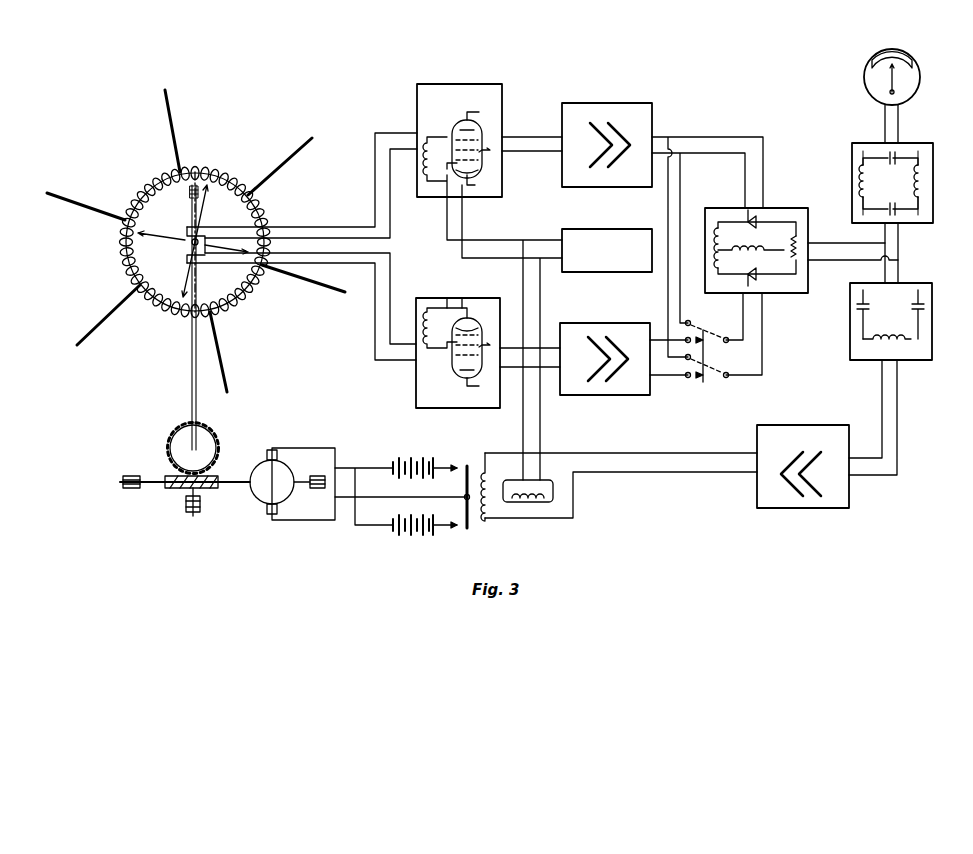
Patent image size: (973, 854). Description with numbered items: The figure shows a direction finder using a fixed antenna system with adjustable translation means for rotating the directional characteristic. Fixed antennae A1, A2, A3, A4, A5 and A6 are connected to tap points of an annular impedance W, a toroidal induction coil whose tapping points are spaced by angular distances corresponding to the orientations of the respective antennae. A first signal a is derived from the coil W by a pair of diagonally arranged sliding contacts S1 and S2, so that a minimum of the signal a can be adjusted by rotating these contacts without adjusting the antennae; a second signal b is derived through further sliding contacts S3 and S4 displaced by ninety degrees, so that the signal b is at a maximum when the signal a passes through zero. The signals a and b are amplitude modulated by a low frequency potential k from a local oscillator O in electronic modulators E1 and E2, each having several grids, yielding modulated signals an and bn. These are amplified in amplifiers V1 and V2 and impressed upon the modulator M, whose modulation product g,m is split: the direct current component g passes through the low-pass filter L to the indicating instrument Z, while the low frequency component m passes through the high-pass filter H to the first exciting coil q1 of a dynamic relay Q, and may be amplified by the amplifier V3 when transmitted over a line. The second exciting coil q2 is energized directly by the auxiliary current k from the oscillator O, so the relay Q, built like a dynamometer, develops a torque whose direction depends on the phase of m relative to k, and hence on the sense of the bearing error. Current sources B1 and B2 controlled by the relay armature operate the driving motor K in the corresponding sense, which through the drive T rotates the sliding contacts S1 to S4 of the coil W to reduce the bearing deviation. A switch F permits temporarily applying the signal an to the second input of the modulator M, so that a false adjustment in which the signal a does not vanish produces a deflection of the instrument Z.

The fixed antenna A1 is at (164, 108).
The fixed antenna A2 is at (86, 200).
The fixed antenna A3 is at (88, 336).
The fixed antenna A4 is at (228, 388).
The fixed antenna A5 is at (322, 290).
The fixed antenna A6 is at (298, 151).
The annular impedance W is at (168, 173).
The sliding contact S1 is at (170, 226).
The sliding contact S2 is at (236, 251).
The sliding contact S3 is at (184, 287).
The sliding contact S4 is at (201, 222).
The worm gear drive T is at (172, 478).
The driving motor K is at (263, 491).
The electronic modulator E1 is at (436, 86).
The electronic modulator E2 is at (416, 386).
The first signal a is at (388, 135).
The second signal b is at (372, 326).
The modulated signal an is at (522, 144).
The modulated signal bn is at (551, 386).
The low frequency potential k is at (486, 242).
The amplifier V1 is at (583, 108).
The amplifier V2 is at (616, 394).
The amplifier V3 is at (801, 505).
The local oscillator O is at (607, 250).
The modulator M is at (774, 214).
The switch F is at (730, 382).
The indicating instrument Z is at (915, 80).
The direct current component g is at (898, 135).
The low-pass filter L is at (932, 197).
The high-pass filter H is at (932, 321).
The modulation product g,m is at (826, 258).
The low frequency component m is at (858, 478).
The current source B1 is at (407, 461).
The current source B2 is at (410, 529).
The dynamic relay Q is at (468, 528).
The first exciting coil q1 is at (490, 524).
The second exciting coil q2 is at (545, 505).